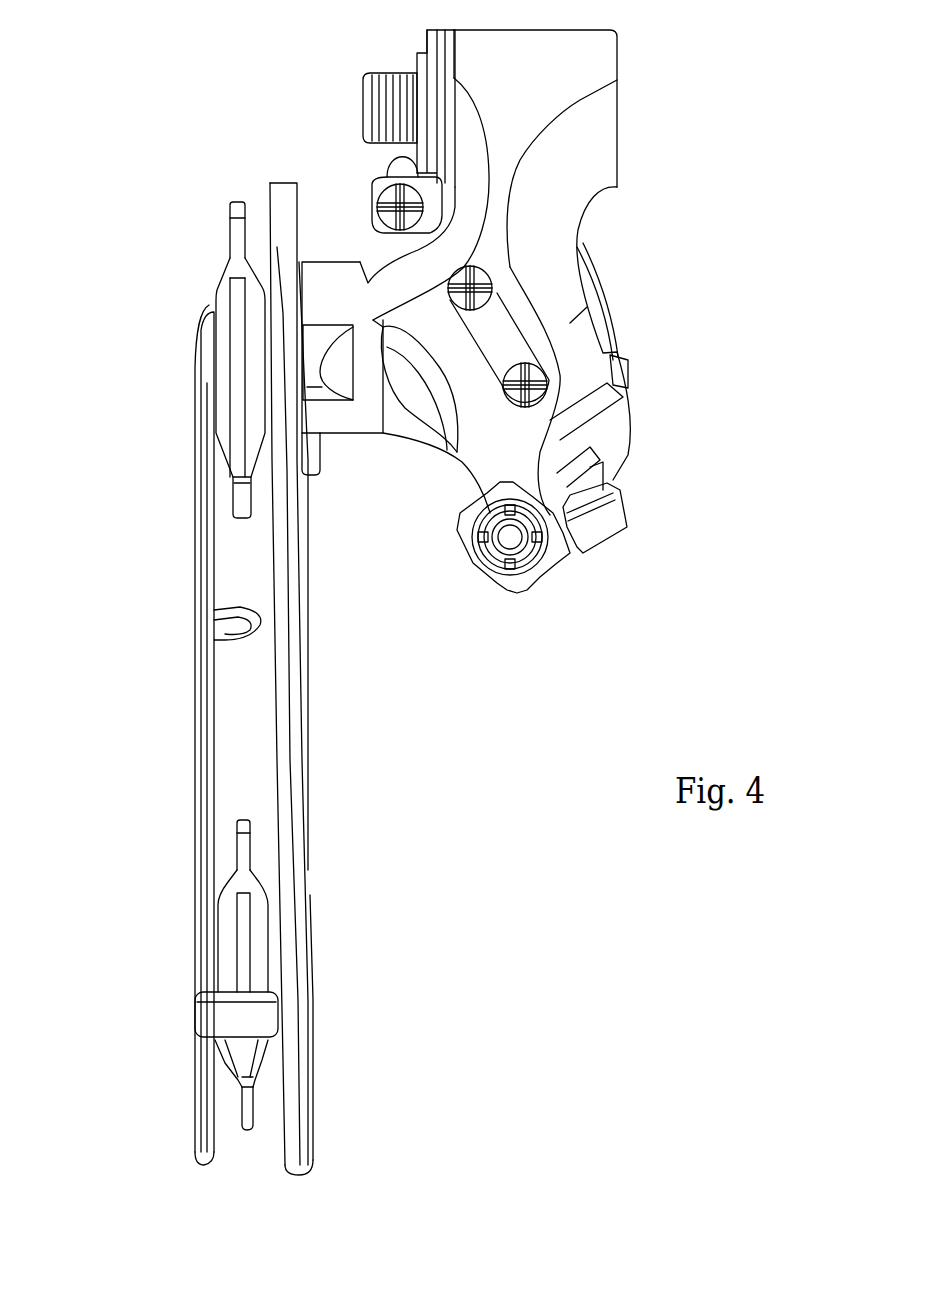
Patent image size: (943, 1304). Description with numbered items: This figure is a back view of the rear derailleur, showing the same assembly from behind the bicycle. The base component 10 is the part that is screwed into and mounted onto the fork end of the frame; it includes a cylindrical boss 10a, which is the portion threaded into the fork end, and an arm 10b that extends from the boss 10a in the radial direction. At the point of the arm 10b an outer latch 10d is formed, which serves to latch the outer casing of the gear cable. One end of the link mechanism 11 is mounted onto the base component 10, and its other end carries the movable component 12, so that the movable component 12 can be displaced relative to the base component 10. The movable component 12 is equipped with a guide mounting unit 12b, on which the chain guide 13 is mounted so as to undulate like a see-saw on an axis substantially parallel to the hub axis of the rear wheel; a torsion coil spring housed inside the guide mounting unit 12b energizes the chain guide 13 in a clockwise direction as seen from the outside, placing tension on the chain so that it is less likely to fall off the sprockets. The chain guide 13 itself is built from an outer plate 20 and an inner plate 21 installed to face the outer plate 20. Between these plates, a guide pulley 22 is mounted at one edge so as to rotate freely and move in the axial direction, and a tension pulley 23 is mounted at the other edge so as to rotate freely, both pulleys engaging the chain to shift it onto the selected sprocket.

The base component 10 is at (585, 193).
The boss 10a is at (593, 155).
The arm 10b is at (590, 303).
The outer latch 10d is at (503, 590).
The link mechanism 11 is at (622, 340).
The movable component 12 is at (350, 418).
The guide mounting unit 12b is at (383, 420).
The chain guide 13 is at (183, 223).
The outer plate 20 is at (280, 183).
The inner plate 21 is at (200, 572).
The guide pulley 22 is at (238, 377).
The tension pulley 23 is at (258, 943).